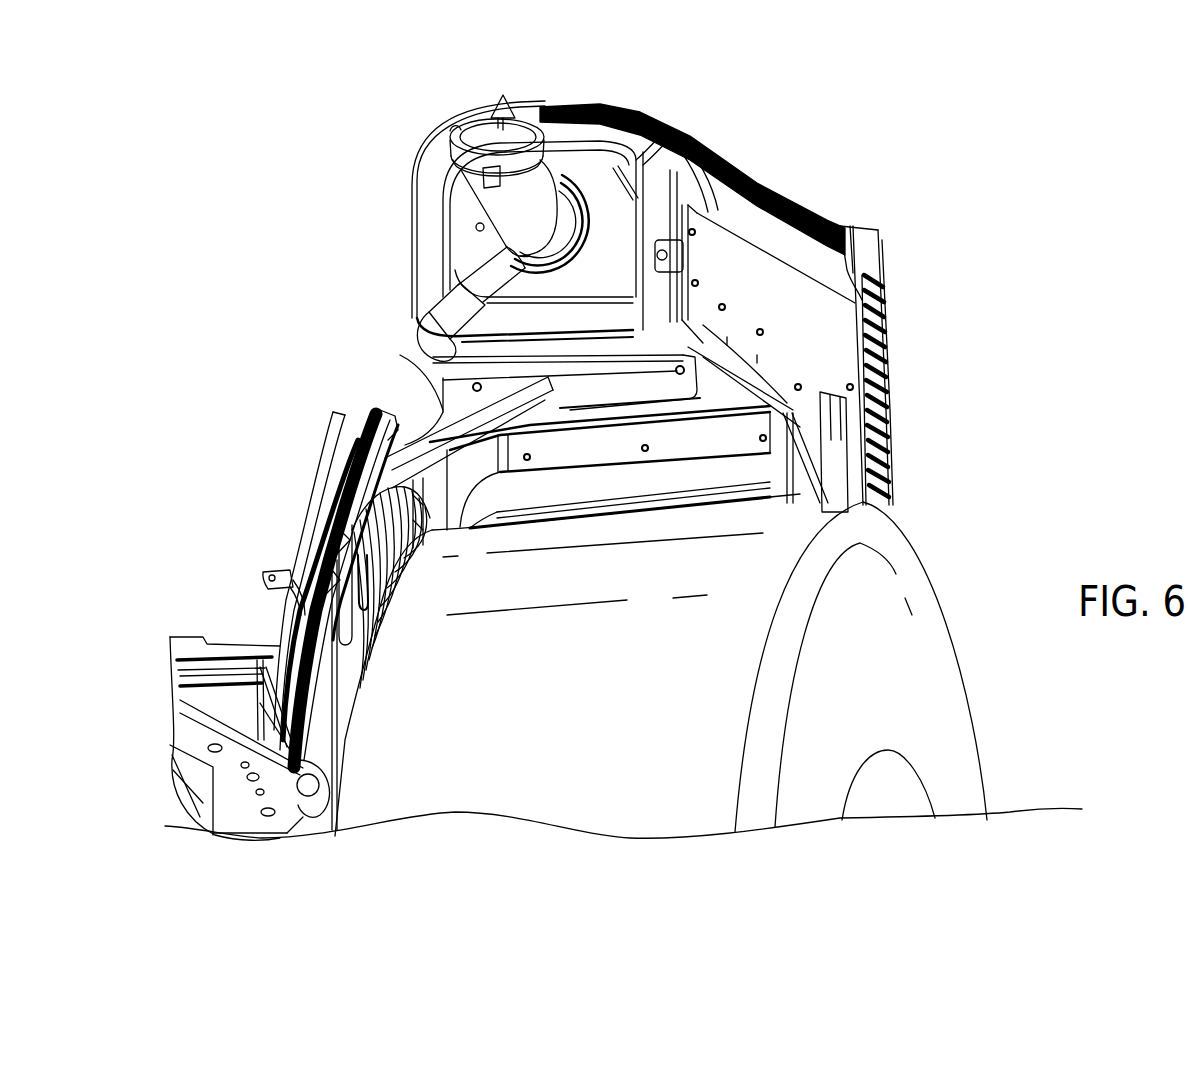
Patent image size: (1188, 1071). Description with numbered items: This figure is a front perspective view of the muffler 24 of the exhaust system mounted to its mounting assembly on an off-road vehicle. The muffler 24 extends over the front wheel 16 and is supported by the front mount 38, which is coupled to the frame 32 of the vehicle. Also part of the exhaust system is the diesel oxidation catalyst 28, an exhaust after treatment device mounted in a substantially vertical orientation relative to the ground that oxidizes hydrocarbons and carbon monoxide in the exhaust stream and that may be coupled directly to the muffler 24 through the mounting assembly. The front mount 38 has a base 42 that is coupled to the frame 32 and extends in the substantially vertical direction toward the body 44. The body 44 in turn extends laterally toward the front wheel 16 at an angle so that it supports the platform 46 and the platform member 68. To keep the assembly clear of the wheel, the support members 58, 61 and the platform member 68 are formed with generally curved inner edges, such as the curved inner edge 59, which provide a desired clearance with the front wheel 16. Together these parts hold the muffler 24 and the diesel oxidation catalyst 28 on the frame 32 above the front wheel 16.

The front wheel 16 is at (935, 584).
The muffler 24 is at (668, 118).
The diesel oxidation catalyst 28 is at (888, 230).
The frame 32 is at (238, 636).
The front mount 38 is at (325, 396).
The base 42 is at (343, 673).
The body 44 is at (430, 455).
The platform 46 is at (432, 368).
The support member 58 is at (345, 500).
The curved inner edge 59 is at (340, 534).
The support member 61 is at (750, 470).
The platform member 68 is at (462, 410).